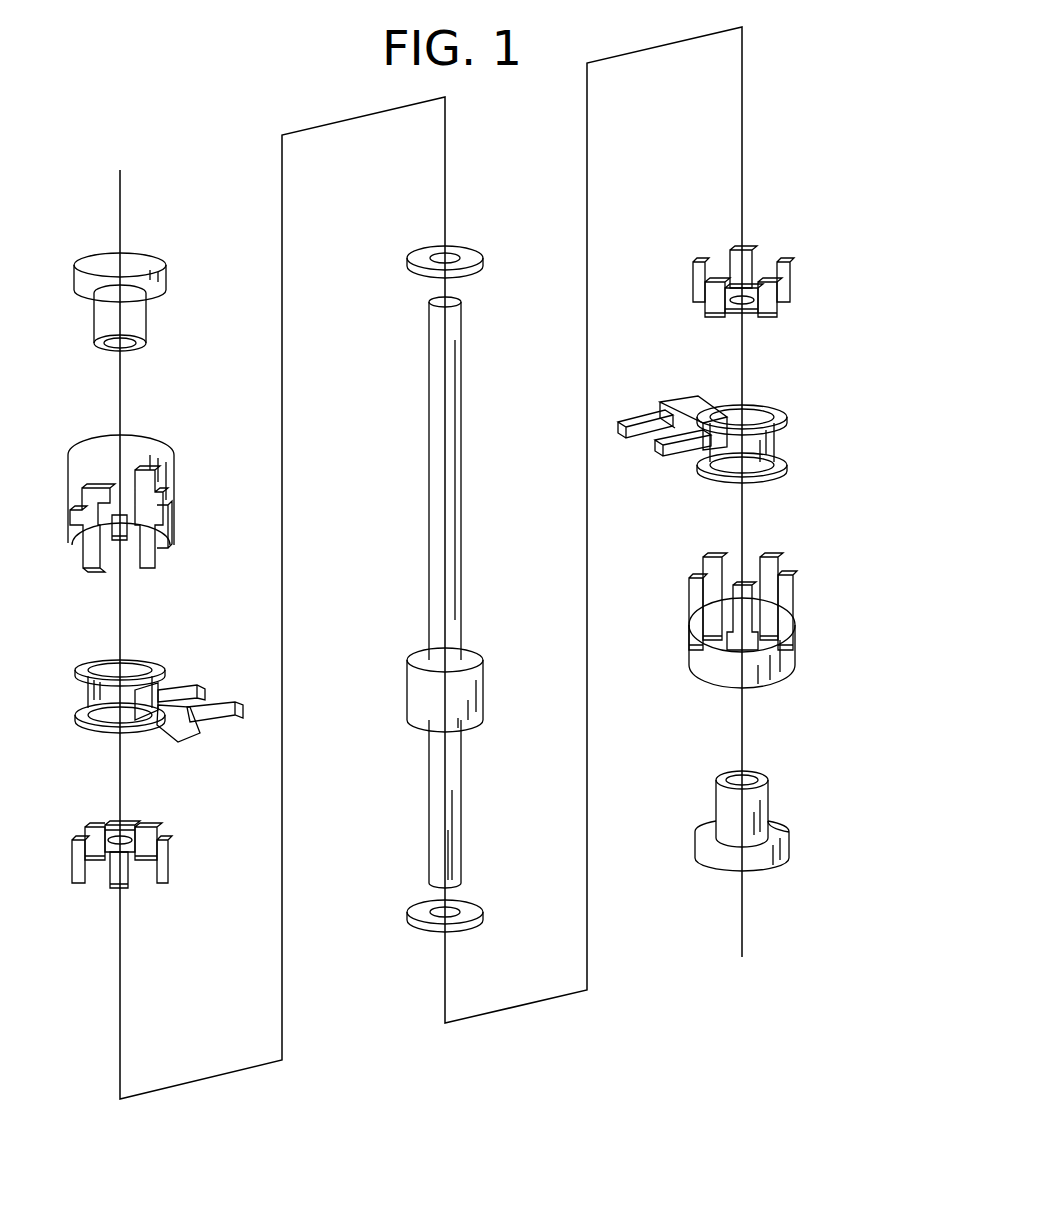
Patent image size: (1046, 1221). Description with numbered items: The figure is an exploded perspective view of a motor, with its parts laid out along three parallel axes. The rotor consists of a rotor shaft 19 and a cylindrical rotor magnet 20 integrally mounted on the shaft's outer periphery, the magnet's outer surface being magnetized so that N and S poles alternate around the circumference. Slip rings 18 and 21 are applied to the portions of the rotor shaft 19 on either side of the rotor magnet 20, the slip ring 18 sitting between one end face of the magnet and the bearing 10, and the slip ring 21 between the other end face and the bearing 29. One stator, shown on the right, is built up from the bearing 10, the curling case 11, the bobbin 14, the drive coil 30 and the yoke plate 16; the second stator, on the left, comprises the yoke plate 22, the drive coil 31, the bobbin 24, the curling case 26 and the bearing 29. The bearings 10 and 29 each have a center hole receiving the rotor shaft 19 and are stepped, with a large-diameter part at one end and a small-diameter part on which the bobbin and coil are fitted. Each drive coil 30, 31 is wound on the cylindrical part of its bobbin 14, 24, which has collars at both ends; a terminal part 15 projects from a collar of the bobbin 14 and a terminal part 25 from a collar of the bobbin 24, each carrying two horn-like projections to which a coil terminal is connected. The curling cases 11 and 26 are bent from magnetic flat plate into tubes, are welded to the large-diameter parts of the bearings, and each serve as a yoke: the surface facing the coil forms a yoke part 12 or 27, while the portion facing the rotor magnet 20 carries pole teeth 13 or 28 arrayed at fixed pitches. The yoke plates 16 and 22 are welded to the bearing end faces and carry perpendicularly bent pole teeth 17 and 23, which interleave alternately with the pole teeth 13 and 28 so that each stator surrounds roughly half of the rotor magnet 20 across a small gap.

The bearing 10 is at (752, 800).
The curling case 11 is at (788, 615).
The yoke part 12 is at (784, 666).
The pole teeth 13 is at (774, 564).
The bobbin 14 is at (781, 450).
The terminal part 15 is at (684, 400).
The yoke plate 16 is at (768, 281).
The pole teeth 17 is at (748, 262).
The slip ring 18 is at (468, 918).
The rotor shaft 19 is at (463, 804).
The rotor magnet 20 is at (480, 690).
The slip ring 21 is at (466, 254).
The yoke plate 22 is at (104, 855).
The pole teeth 23 is at (110, 890).
The bobbin 24 is at (90, 659).
The terminal part 25 is at (177, 722).
The curling case 26 is at (116, 463).
The yoke part 27 is at (138, 460).
The pole teeth 28 is at (168, 542).
The bearing 29 is at (112, 268).
The drive coil 30 is at (782, 437).
The drive coil 31 is at (84, 693).